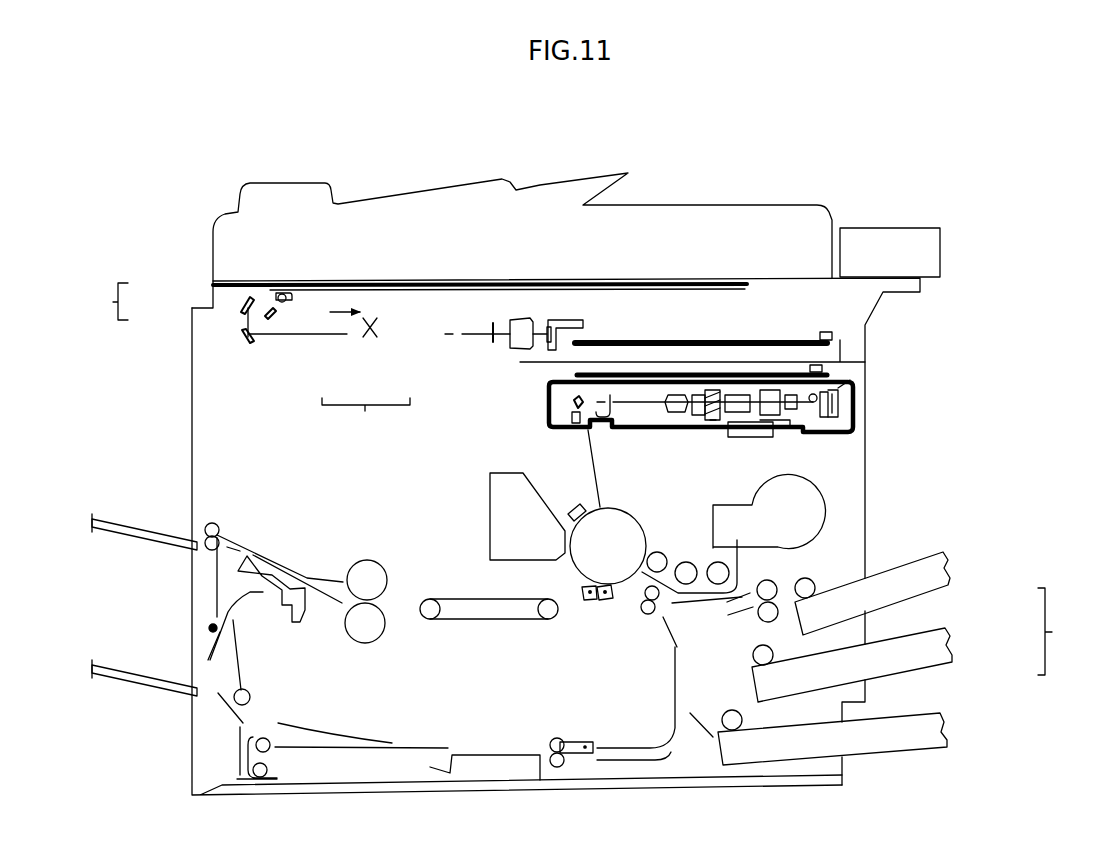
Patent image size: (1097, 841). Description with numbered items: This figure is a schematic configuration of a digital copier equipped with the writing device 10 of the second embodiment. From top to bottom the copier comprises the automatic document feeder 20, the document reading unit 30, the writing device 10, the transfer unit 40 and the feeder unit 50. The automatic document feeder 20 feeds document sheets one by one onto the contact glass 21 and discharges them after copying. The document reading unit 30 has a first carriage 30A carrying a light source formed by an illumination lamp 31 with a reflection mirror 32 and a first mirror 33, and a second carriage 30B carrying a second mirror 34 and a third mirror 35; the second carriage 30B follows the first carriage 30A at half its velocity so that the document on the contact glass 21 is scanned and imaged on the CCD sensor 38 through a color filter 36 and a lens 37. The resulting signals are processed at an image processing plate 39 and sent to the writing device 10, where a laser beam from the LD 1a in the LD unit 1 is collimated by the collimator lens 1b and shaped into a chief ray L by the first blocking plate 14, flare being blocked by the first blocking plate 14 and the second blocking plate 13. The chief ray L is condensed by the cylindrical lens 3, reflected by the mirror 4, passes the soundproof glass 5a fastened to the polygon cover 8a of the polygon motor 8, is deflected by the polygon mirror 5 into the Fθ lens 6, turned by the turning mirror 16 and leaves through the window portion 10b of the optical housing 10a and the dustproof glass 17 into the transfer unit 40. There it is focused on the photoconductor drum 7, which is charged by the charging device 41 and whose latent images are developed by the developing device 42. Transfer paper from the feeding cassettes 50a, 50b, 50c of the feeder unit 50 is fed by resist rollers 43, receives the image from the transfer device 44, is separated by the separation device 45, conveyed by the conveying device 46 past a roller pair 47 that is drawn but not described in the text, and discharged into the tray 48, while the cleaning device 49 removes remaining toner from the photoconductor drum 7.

The LD unit 1 is at (838, 410).
The LD 1a is at (850, 380).
The collimator lens 1b is at (820, 427).
The cylindrical lens 3 is at (700, 393).
The mirror 4 is at (678, 415).
The polygon mirror 5 is at (757, 425).
The soundproof glass 5a is at (712, 388).
The Fθ lens 6 is at (665, 398).
The photoconductor drum 7 is at (633, 513).
The polygon motor 8 is at (770, 427).
The polygon cover 8a is at (790, 393).
The writing device 10 is at (855, 398).
The optical housing 10a is at (627, 427).
The window portion 10b is at (580, 410).
The second blocking plate 13 is at (740, 393).
The first blocking plate 14 is at (770, 388).
The turning mirror 16 is at (570, 403).
The dustproof glass 17 is at (577, 427).
The automatic document feeder 20 is at (827, 205).
The contact glass 21 is at (477, 283).
The document reading unit 30 is at (207, 338).
The first carriage 30A is at (366, 422).
The second carriage 30B is at (96, 301).
The illumination lamp 31 is at (288, 302).
The reflection mirror 32 is at (292, 300).
The first mirror 33 is at (284, 303).
The second mirror 34 is at (242, 307).
The third mirror 35 is at (242, 333).
The color filter 36 is at (493, 343).
The lens 37 is at (522, 318).
The CCD sensor 38 is at (553, 320).
The image processing plate 39 is at (657, 340).
The transfer unit 40 is at (832, 493).
The charging device 41 is at (575, 498).
The developing device 42 is at (745, 560).
The resist rollers 43 is at (647, 622).
The transfer device 44 is at (600, 610).
The separation device 45 is at (587, 603).
The conveying device 46 is at (485, 620).
The fixing rollers 47 is at (378, 650).
The tray 48 is at (143, 543).
The cleaning device 49 is at (482, 493).
The feeder unit 50 is at (1063, 631).
The feeding cassette 50a is at (953, 580).
The feeding cassette 50b is at (953, 642).
The feeding cassette 50c is at (947, 710).
The chief ray L is at (715, 418).